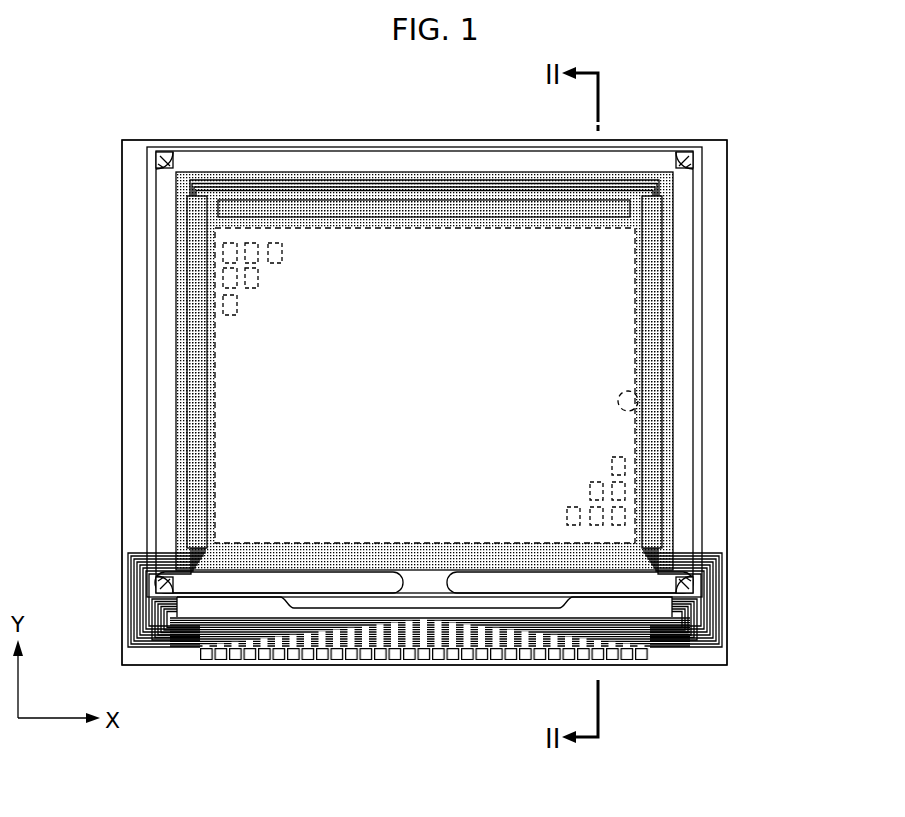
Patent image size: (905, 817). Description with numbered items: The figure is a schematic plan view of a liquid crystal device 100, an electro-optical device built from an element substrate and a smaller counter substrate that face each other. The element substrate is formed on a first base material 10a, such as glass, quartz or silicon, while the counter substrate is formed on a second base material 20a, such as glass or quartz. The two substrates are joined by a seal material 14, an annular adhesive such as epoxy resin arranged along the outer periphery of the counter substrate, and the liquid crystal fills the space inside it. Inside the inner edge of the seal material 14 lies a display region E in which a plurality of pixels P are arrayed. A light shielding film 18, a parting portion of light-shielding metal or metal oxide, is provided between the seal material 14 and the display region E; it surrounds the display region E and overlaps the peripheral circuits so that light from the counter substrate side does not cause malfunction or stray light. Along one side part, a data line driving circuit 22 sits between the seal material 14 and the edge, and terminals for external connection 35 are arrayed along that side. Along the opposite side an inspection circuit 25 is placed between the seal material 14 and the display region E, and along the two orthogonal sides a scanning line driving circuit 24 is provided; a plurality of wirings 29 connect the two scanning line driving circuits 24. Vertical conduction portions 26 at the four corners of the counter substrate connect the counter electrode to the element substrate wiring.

The liquid crystal device 100 is at (724, 98).
The first base material 10a is at (237, 140).
The second base material 20a is at (338, 147).
The seal material 14 is at (683, 318).
The light shielding film 18 is at (302, 556).
The display region E is at (640, 401).
The scanning line driving circuit 24 is at (200, 350).
The inspection circuit 25 is at (466, 200).
The wirings 29 is at (388, 180).
The pixel P is at (238, 297).
The data line driving circuit 22 is at (190, 600).
The terminals for external connection 35 is at (300, 658).
The vertical conduction portion 26 is at (157, 160).